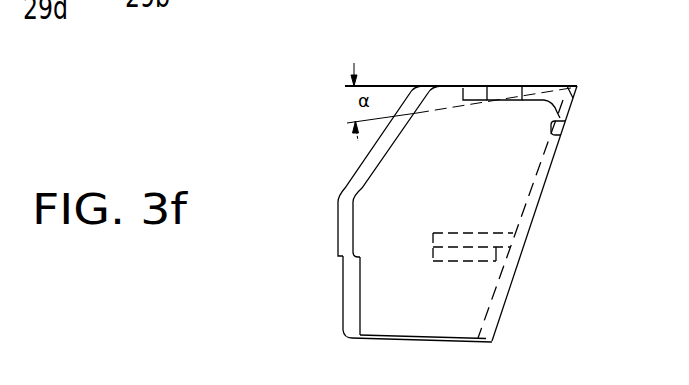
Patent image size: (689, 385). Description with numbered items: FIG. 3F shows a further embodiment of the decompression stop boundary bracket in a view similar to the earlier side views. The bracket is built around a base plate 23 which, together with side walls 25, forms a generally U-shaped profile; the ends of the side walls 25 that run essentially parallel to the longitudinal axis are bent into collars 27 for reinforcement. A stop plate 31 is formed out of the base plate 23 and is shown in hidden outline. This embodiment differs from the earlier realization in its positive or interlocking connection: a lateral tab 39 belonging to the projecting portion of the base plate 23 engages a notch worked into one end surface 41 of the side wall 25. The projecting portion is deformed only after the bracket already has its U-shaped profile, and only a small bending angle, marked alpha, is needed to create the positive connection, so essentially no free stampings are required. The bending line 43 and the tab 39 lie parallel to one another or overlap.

The base plate 23 is at (541, 186).
The side walls 25 is at (370, 284).
The collars 27 is at (348, 203).
The stop plate 31 is at (464, 242).
The tab 39 is at (512, 92).
The end surface 41 is at (468, 79).
The bending line 43 is at (550, 107).